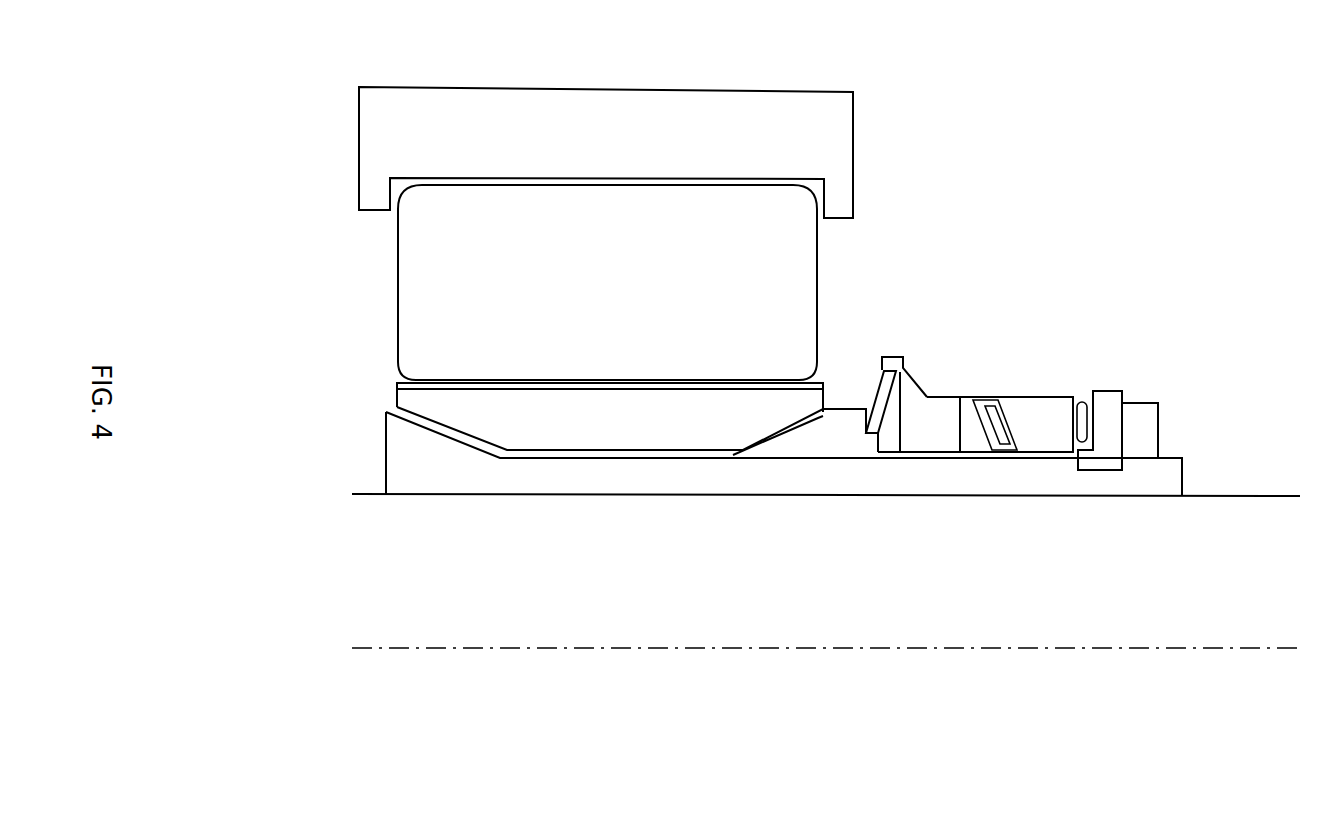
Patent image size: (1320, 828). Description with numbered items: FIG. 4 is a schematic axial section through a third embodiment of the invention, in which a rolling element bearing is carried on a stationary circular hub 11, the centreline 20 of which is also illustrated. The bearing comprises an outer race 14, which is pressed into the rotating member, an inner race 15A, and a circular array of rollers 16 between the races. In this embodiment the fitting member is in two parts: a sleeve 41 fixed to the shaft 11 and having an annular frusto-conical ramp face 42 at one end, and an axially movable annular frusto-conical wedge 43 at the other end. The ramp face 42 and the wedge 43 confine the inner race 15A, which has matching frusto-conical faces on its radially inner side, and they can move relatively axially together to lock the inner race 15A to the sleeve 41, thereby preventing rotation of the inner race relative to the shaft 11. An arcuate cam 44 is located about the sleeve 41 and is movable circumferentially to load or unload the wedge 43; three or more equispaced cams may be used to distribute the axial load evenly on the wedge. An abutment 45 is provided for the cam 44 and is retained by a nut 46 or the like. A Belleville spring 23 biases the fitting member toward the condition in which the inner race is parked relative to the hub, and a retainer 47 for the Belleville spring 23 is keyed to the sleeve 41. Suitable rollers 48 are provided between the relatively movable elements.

The hub 11 is at (1250, 517).
The outer race 14 is at (830, 120).
The inner race 15A is at (420, 398).
The rollers 16 is at (805, 262).
The centreline 20 is at (1243, 650).
The Belleville spring washer 23 is at (863, 393).
The sleeve 41 is at (422, 475).
The ramp face 42 is at (432, 428).
The wedge 43 is at (818, 437).
The cam 44 is at (1049, 272).
The abutment 45 is at (1107, 400).
The nut 46 is at (1181, 395).
The retainer 47 is at (927, 397).
The rollers 48 is at (987, 397).